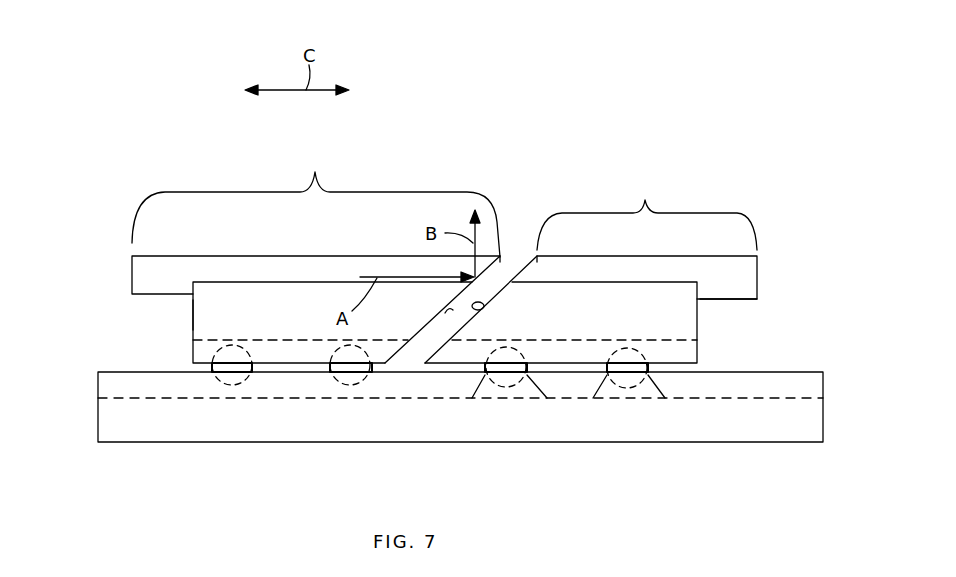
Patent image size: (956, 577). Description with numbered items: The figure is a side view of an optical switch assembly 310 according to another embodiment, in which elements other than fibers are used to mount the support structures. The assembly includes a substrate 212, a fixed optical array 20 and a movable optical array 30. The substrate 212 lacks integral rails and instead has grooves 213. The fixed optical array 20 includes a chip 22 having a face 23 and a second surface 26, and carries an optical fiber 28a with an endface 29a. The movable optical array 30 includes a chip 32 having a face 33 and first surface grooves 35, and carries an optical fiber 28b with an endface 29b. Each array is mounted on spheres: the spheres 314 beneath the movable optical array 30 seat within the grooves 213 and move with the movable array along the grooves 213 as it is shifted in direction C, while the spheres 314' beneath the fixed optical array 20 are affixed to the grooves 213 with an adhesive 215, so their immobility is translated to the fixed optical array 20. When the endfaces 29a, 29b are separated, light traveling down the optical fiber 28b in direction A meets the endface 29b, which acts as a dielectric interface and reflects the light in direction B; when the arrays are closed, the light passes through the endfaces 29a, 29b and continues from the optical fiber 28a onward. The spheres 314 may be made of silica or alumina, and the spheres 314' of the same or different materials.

The optical switch assembly 310 is at (712, 140).
The movable optical array 30 is at (315, 172).
The fixed optical array 20 is at (645, 200).
The optical fiber 28b is at (152, 276).
The optical fiber 28a is at (754, 257).
The second surface 26 is at (672, 283).
The chip 22 is at (683, 310).
The chip 32 is at (218, 310).
The face 33 is at (448, 310).
The face 23 is at (484, 308).
The first surface grooves 35 is at (193, 352).
The spheres 314 is at (289, 422).
The spheres 314' is at (615, 400).
The adhesive 215 is at (483, 395).
The substrate 212 is at (765, 430).
The grooves 213 is at (135, 390).
The endface 29b is at (498, 266).
The endface 29a is at (525, 258).